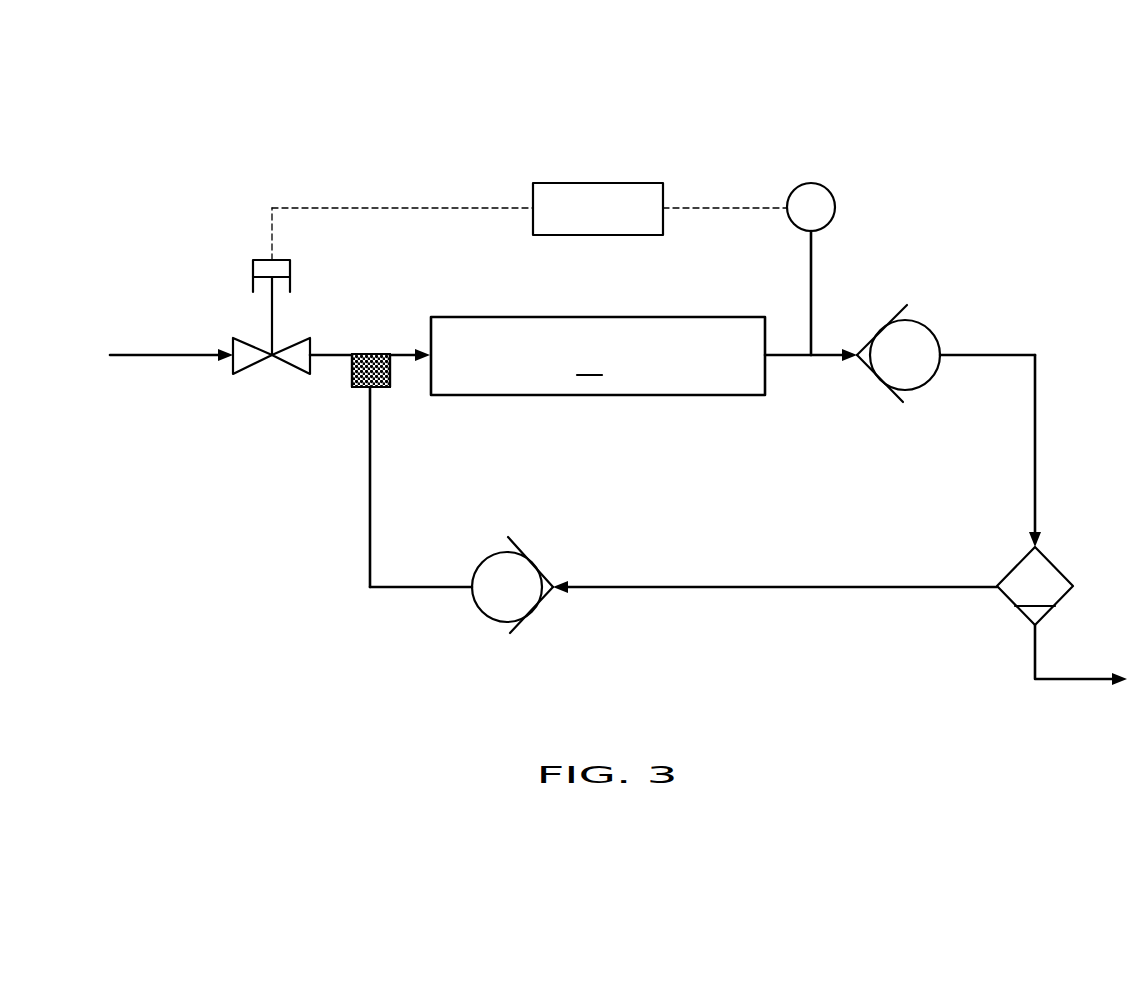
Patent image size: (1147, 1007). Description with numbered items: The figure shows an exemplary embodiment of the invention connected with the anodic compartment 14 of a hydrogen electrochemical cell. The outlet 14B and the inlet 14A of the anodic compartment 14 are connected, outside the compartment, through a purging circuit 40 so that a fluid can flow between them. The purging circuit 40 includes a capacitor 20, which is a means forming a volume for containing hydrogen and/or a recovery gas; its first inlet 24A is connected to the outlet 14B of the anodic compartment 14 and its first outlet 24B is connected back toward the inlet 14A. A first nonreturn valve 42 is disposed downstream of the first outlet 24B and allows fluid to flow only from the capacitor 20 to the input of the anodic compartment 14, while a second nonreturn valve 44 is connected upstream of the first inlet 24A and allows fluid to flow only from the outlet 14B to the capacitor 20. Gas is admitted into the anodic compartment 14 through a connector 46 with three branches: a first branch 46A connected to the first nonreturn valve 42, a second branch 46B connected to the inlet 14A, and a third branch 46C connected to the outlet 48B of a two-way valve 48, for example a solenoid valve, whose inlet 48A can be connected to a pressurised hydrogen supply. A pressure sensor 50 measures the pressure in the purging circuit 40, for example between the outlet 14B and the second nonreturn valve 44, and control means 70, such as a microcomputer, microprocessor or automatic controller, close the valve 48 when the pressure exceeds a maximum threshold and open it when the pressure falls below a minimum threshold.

The anodic compartment 14 is at (598, 356).
The inlet of the anodic compartment 14A is at (421, 363).
The outlet of the anodic compartment 14B is at (770, 366).
The capacitor 20 is at (1043, 585).
The first inlet of the capacitor 24A is at (1030, 540).
The first outlet of the capacitor 24B is at (992, 592).
The purging circuit 40 is at (283, 515).
The first nonreturn valve 42 is at (498, 597).
The second nonreturn valve 44 is at (912, 343).
The connector with three branches 46 is at (360, 398).
The first branch 46A is at (374, 389).
The second branch 46B is at (393, 352).
The third branch 46C is at (350, 352).
The two-way valve 48 is at (275, 362).
The inlet of the two-way valve 48A is at (230, 348).
The outlet of the two-way valve 48B is at (312, 362).
The pressure sensor 50 is at (815, 204).
The control means 70 is at (615, 192).